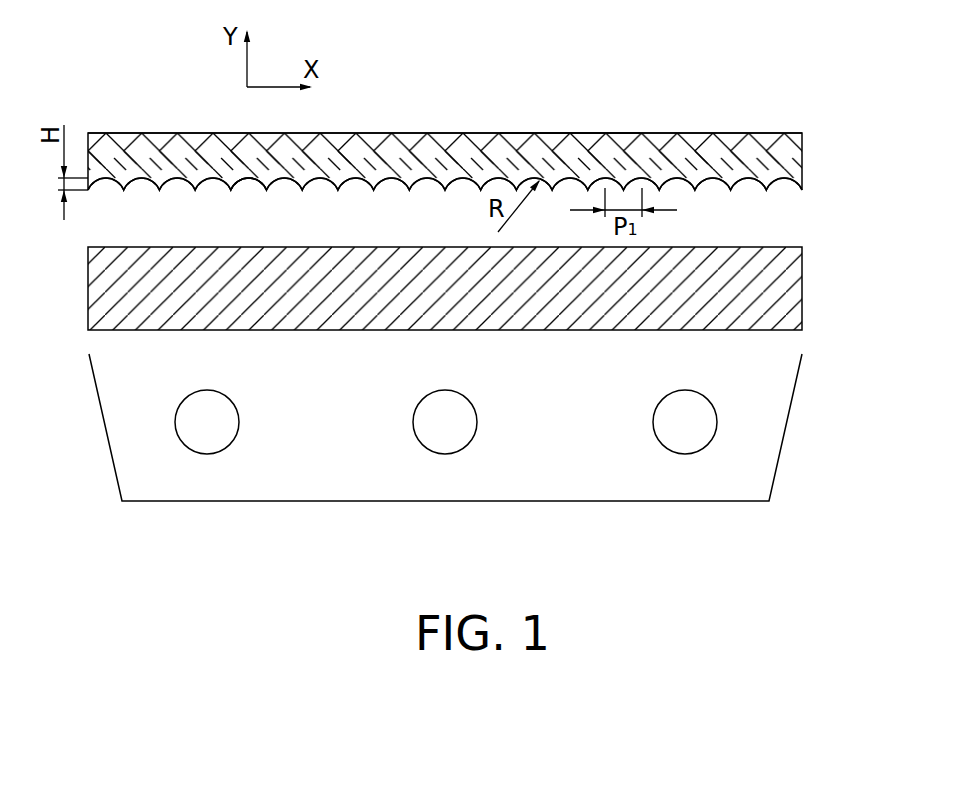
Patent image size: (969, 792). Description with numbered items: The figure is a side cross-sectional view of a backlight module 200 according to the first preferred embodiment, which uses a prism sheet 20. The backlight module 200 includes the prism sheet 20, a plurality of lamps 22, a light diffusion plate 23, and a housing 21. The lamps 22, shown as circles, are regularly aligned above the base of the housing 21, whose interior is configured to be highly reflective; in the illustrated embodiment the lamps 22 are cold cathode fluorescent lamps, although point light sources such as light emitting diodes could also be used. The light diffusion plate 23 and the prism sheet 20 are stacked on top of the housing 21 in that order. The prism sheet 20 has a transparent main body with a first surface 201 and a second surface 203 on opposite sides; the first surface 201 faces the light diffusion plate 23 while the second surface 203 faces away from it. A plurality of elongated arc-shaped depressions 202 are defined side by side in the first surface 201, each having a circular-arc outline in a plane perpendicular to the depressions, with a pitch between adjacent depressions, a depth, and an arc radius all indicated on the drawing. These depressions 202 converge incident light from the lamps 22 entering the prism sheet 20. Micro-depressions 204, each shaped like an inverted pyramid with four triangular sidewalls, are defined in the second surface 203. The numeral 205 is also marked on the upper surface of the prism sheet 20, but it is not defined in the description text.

The backlight module 200 is at (484, 132).
The prism sheet 20 is at (484, 140).
The first surface 201 is at (265, 192).
The elongated arc-shaped depressions 202 is at (782, 180).
The second surface 203 is at (158, 130).
The micro-depressions 204 is at (767, 135).
The light emitting surface 205 is at (568, 131).
The light diffusion plate 23 is at (792, 293).
The housing 21 is at (792, 407).
The lamps 22 is at (692, 442).